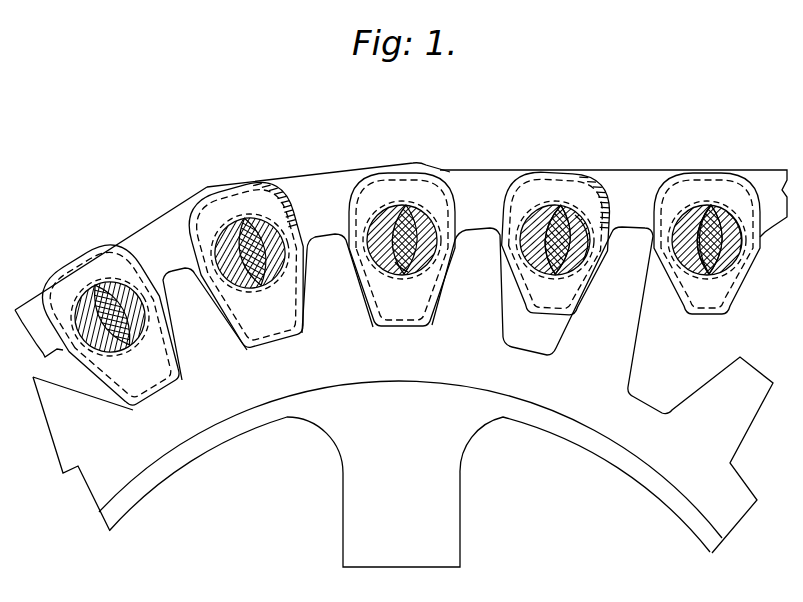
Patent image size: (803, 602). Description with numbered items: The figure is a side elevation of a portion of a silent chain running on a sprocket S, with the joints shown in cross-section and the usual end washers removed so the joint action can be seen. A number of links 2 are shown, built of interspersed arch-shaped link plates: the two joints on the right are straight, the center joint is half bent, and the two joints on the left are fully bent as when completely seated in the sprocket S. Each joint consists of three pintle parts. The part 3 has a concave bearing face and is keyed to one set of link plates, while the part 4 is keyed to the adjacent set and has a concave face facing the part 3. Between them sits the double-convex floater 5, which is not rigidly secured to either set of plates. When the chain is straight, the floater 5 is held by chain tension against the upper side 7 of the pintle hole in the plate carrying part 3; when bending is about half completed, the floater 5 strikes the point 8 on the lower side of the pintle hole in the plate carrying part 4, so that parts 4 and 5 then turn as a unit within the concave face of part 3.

The link 2 is at (38, 296).
The pintle part 3 is at (533, 220).
The pintle part 4 is at (577, 220).
The floater 5 is at (557, 208).
The upper side of the pintle hole 7 is at (707, 203).
The point on lower side of pintle hole 8 is at (393, 267).
The sprocket S is at (588, 407).